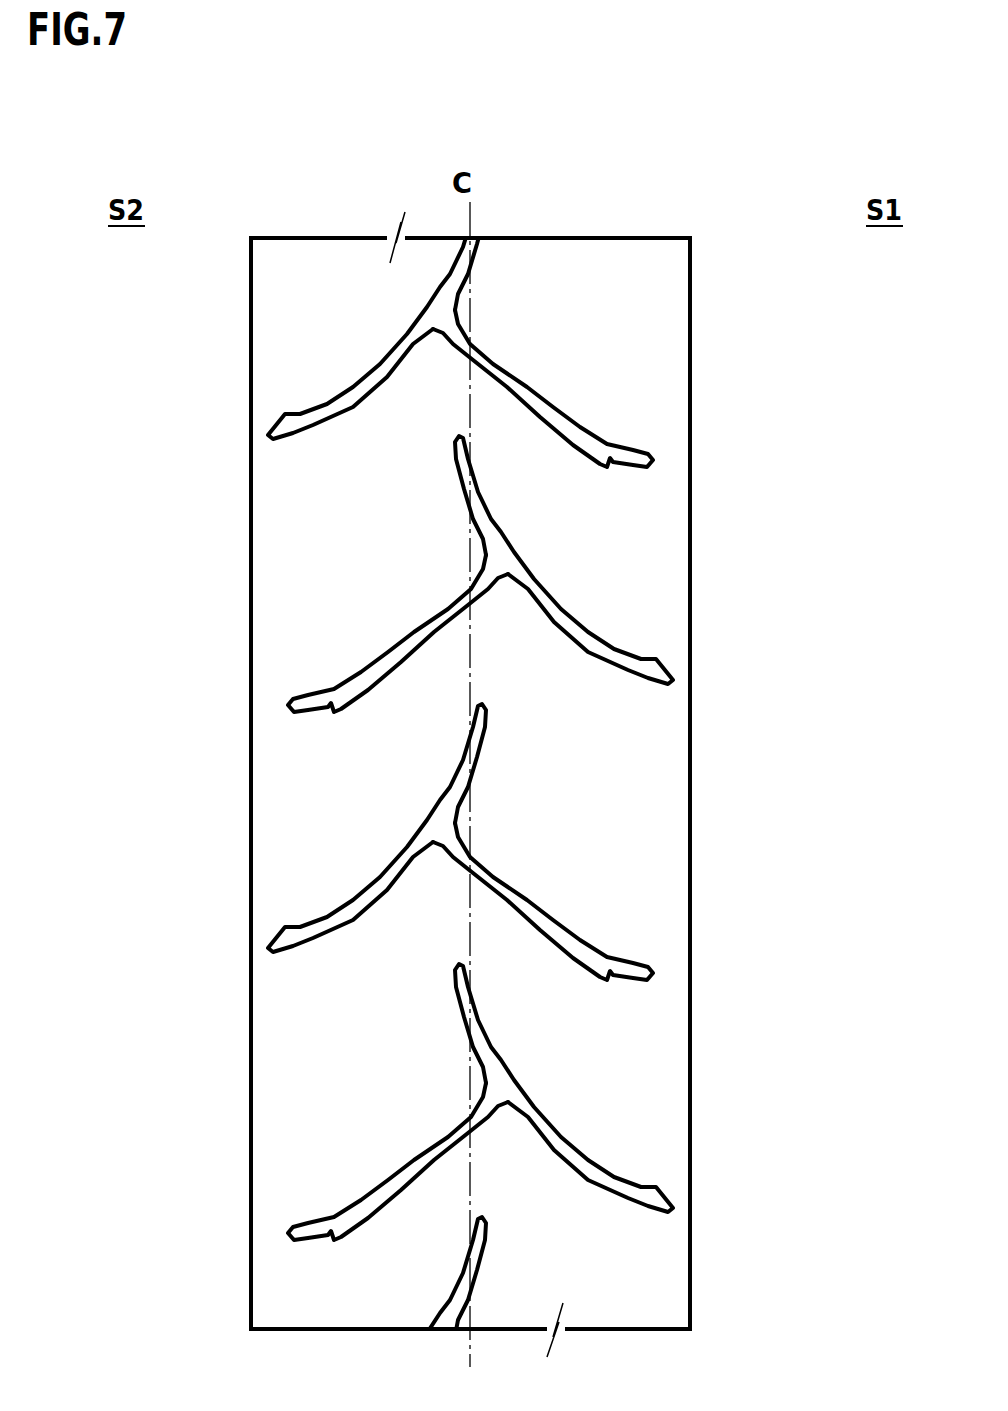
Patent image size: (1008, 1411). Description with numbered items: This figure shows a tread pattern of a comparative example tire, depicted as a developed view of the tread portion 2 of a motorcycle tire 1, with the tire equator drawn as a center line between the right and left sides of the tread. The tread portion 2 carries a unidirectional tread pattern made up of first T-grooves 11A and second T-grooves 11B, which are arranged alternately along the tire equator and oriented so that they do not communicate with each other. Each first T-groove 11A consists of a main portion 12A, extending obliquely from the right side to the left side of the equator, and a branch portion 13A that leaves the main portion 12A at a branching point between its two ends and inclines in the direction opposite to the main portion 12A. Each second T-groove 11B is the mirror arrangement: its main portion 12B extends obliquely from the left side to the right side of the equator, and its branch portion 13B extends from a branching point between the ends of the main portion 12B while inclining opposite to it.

The motorcycle tire 1 is at (590, 250).
The tread portion 2 is at (640, 280).
The first T-groove 11A is at (571, 801).
The main portion 12A is at (485, 300).
The branch portion 13A is at (591, 425).
The second T-groove 11B is at (367, 838).
The main portion 12B is at (456, 545).
The branch portion 13B is at (351, 670).